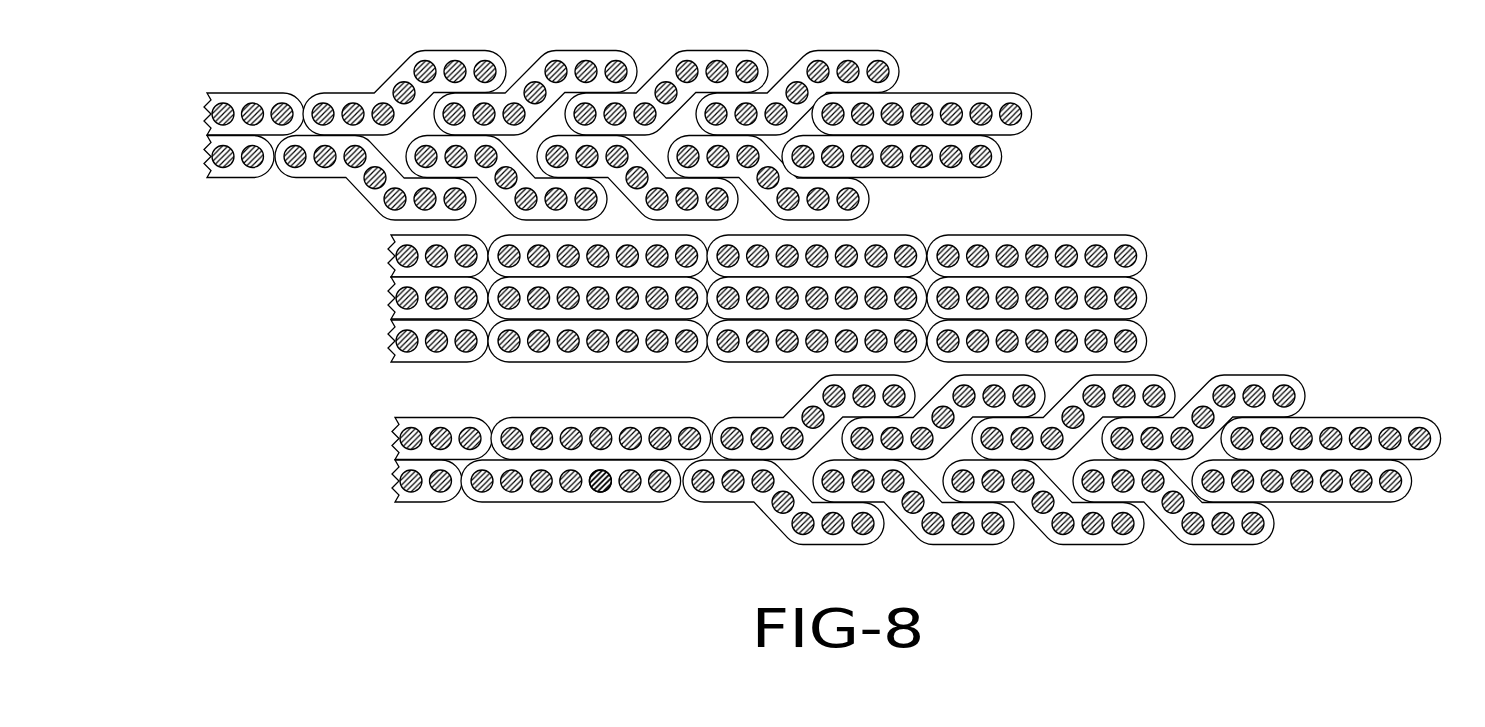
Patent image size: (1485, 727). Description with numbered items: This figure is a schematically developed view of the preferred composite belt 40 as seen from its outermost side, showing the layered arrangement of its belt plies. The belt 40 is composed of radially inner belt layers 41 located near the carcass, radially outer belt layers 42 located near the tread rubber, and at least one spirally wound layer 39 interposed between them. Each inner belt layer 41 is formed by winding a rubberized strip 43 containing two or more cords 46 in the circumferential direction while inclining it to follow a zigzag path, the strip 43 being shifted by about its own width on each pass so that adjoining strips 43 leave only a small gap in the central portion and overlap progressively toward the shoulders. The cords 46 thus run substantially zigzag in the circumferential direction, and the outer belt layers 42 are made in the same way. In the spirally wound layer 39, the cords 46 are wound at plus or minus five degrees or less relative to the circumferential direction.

The belt 40 is at (759, 322).
The radially outer belt layer 42 is at (196, 134).
The spirally wound layer 39 is at (384, 301).
The radially inner belt layer 41 is at (856, 483).
The rubberized strip 43 is at (571, 526).
The cord 46 is at (607, 489).